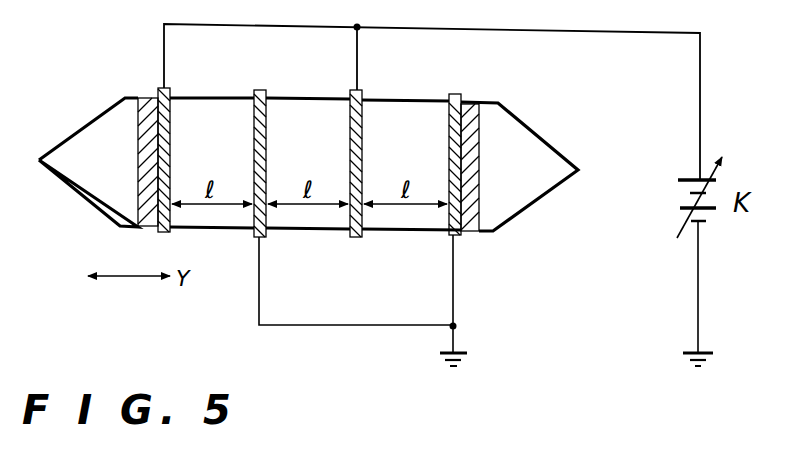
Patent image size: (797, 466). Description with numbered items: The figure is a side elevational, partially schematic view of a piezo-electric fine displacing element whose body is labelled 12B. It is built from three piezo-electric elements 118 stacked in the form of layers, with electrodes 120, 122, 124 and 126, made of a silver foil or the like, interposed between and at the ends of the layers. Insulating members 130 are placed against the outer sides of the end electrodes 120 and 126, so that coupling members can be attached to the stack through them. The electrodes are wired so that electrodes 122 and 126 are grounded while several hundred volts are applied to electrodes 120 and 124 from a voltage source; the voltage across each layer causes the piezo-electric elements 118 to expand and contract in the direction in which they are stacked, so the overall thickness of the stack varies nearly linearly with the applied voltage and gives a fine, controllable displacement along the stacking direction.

The crystal body 12B is at (90, 125).
The piezo-electric element 118 is at (223, 97).
The electrode 120 is at (160, 233).
The electrode 122 is at (260, 238).
The electrode 124 is at (358, 238).
The electrode 126 is at (456, 237).
The insulating member 130 is at (150, 96).